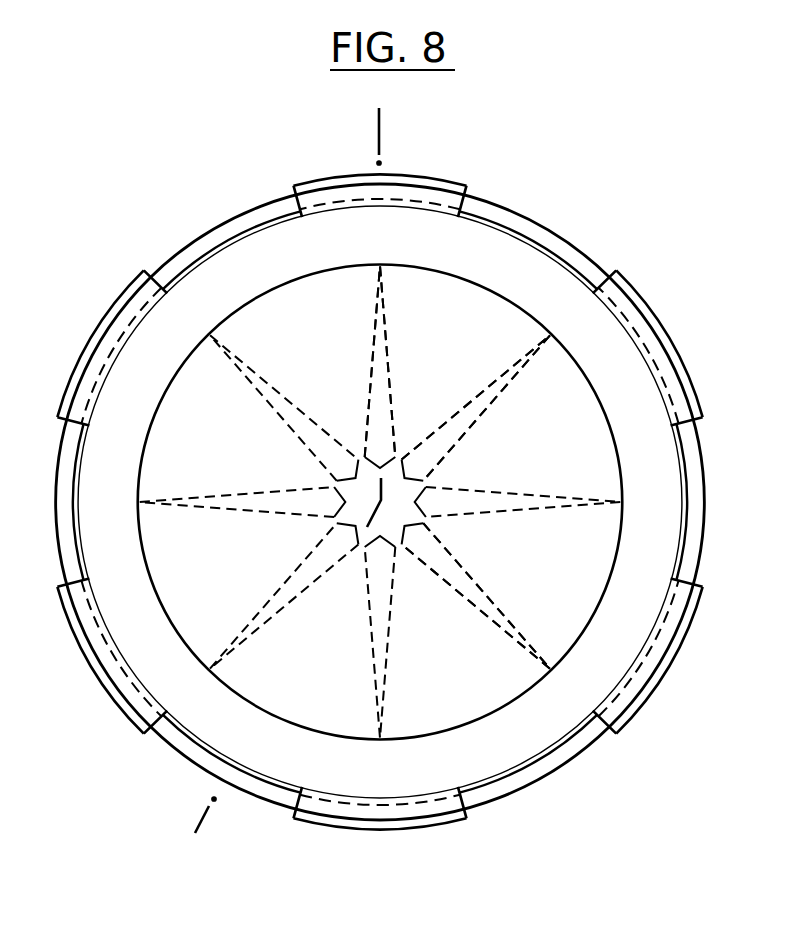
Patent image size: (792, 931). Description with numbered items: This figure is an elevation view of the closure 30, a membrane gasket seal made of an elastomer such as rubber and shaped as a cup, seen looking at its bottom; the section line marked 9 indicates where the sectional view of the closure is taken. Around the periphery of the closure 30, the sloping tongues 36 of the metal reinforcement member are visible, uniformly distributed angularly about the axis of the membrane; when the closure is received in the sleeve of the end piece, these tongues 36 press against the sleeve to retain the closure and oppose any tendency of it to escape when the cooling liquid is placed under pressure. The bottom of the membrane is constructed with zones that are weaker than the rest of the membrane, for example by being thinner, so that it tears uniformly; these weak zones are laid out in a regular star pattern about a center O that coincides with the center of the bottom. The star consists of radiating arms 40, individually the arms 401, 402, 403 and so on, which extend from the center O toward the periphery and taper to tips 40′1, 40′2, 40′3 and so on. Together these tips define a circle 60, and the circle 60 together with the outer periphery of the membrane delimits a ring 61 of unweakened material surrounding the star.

The closure 30 is at (492, 179).
The tongues 36 is at (648, 302).
The circle 60 is at (527, 693).
The ring 61 is at (220, 727).
The center O is at (385, 492).
The radiating arm 401 is at (403, 327).
The radiating arm 402 is at (546, 374).
The radiating arm 403 is at (584, 522).
The tip 40′1 is at (380, 264).
The tip 40′2 is at (553, 340).
The tip 40′3 is at (382, 500).
The radiating arms 40 is at (379, 536).
The section line 9- 9 is at (297, 472).